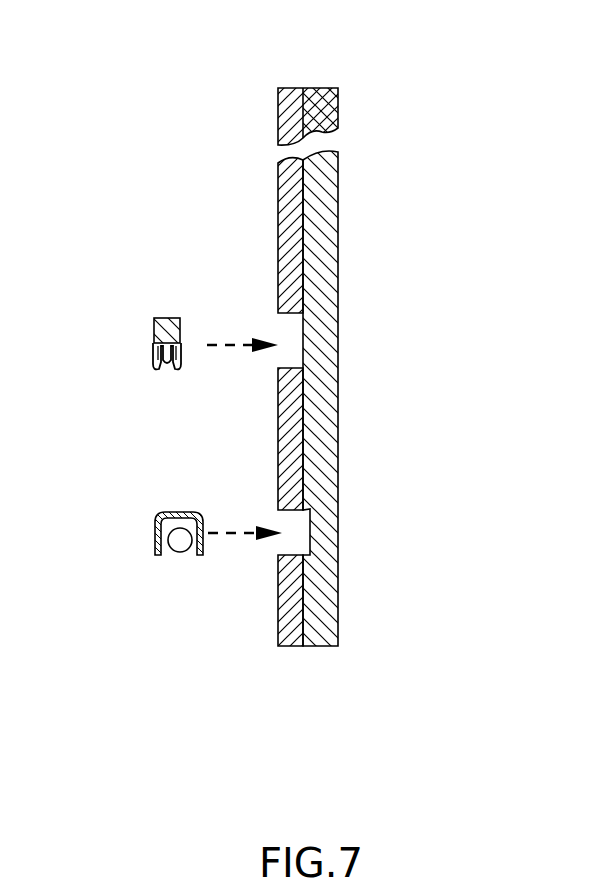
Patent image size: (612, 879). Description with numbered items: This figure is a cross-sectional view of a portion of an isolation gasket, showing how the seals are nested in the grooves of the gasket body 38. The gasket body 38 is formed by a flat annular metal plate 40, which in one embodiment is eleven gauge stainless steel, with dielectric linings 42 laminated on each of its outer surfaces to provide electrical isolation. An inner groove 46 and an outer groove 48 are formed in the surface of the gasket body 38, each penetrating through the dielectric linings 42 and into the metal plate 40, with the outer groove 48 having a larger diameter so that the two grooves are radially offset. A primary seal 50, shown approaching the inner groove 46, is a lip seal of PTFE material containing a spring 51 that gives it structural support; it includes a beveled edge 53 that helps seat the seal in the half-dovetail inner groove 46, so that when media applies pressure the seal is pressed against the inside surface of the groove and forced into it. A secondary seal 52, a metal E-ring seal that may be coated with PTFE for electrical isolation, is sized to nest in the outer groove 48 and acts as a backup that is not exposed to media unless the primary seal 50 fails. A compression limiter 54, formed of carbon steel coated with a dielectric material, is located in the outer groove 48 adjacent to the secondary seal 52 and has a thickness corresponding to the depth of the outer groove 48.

The gasket body 38 is at (300, 88).
The metal plate 40 is at (338, 390).
The dielectric linings 42 is at (285, 430).
The inner groove 46 is at (270, 550).
The outer groove 48 is at (252, 312).
The primary seal 50 is at (134, 536).
The spring 51 is at (176, 557).
The secondary seal 52 is at (152, 356).
The beveled edge 53 is at (170, 513).
The compression limiter 54 is at (154, 327).